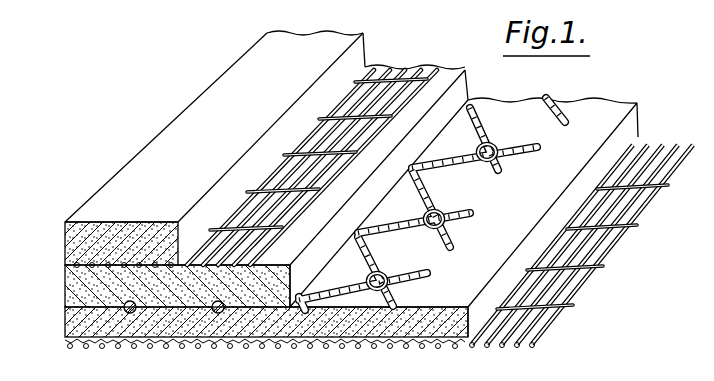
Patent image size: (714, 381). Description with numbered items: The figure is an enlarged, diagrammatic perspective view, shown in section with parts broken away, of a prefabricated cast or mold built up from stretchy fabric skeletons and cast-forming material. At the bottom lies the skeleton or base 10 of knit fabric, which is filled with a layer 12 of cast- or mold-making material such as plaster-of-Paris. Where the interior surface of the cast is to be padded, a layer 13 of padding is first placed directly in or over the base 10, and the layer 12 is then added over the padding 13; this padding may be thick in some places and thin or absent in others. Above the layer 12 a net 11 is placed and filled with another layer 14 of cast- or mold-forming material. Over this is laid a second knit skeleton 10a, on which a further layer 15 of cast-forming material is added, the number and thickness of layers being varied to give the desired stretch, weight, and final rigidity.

The skeleton or base 10 is at (645, 203).
The second knit skeleton 10a is at (388, 100).
The net 11 is at (466, 218).
The layer of cast- or mold-making material 12 is at (66, 328).
The layer of padding 13 is at (148, 348).
The layer of cast- or mold-forming material 14 is at (80, 293).
The layer of cast-forming material 15 is at (66, 246).